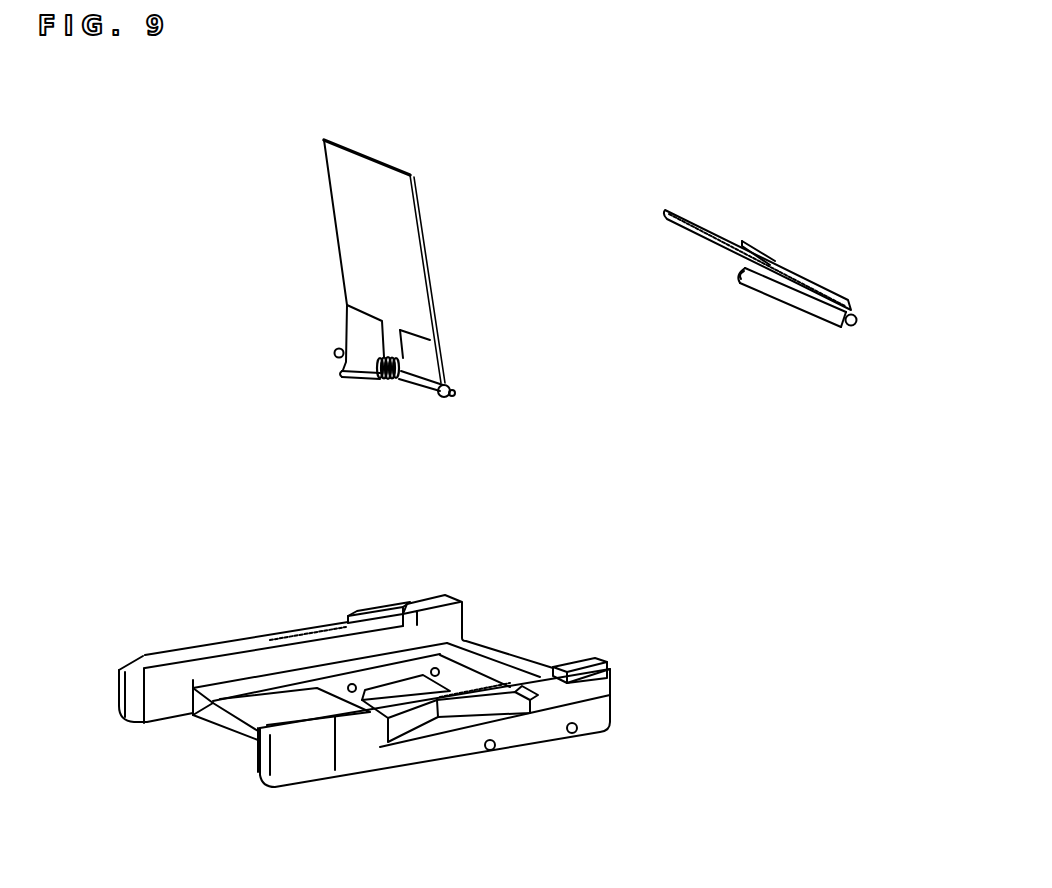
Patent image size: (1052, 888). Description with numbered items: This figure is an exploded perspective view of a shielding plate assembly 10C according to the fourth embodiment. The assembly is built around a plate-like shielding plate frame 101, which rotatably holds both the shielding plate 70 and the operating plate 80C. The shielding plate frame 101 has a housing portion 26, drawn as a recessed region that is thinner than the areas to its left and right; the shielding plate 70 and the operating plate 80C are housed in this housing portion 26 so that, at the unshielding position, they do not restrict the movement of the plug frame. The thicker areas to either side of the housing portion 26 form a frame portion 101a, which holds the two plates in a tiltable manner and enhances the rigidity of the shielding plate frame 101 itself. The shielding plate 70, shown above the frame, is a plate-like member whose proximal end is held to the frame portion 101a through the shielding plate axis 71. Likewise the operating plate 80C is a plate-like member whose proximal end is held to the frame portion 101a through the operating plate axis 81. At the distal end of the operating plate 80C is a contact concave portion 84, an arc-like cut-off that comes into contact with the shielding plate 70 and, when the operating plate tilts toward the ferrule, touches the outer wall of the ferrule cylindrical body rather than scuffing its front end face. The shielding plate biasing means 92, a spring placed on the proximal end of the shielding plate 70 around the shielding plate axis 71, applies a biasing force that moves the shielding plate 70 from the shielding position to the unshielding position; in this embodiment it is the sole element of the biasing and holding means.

The shielding plate 70 is at (422, 218).
The shielding plate axis 71 is at (450, 392).
The shielding plate biasing means 92 is at (388, 380).
The assembly 10C is at (810, 185).
The contact concave portion 84 is at (698, 225).
The operating plate 80C is at (810, 283).
The operating plate axis 81 is at (851, 326).
The shielding plate frame 101 is at (553, 618).
The frame portion 101a is at (177, 660).
The housing portion 26 is at (263, 715).